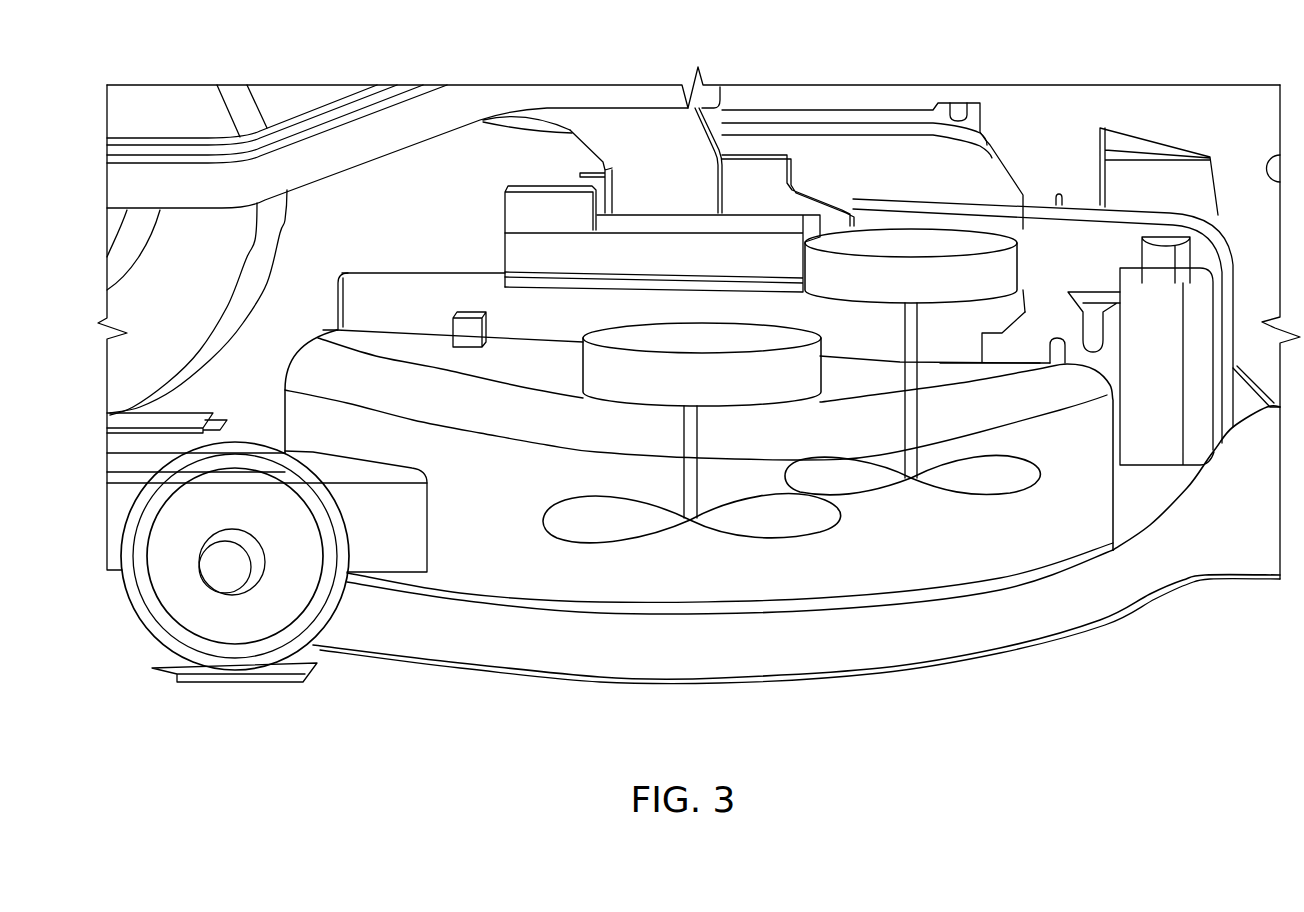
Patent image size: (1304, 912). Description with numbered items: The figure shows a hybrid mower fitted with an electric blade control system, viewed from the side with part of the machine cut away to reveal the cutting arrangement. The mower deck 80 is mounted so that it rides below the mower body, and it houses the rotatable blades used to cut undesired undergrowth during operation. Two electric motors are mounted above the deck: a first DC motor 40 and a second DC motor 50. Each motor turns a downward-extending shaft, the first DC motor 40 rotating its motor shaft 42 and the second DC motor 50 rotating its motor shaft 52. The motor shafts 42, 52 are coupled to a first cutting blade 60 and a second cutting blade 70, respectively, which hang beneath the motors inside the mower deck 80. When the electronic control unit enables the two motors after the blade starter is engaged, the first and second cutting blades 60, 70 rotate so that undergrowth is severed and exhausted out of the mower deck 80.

The first DC motor 40 is at (698, 343).
The motor shaft 42 is at (690, 452).
The second DC motor 50 is at (887, 245).
The motor shaft 52 is at (933, 438).
The first cutting blade 60 is at (595, 530).
The second cutting blade 70 is at (858, 487).
The mower deck 80 is at (670, 573).